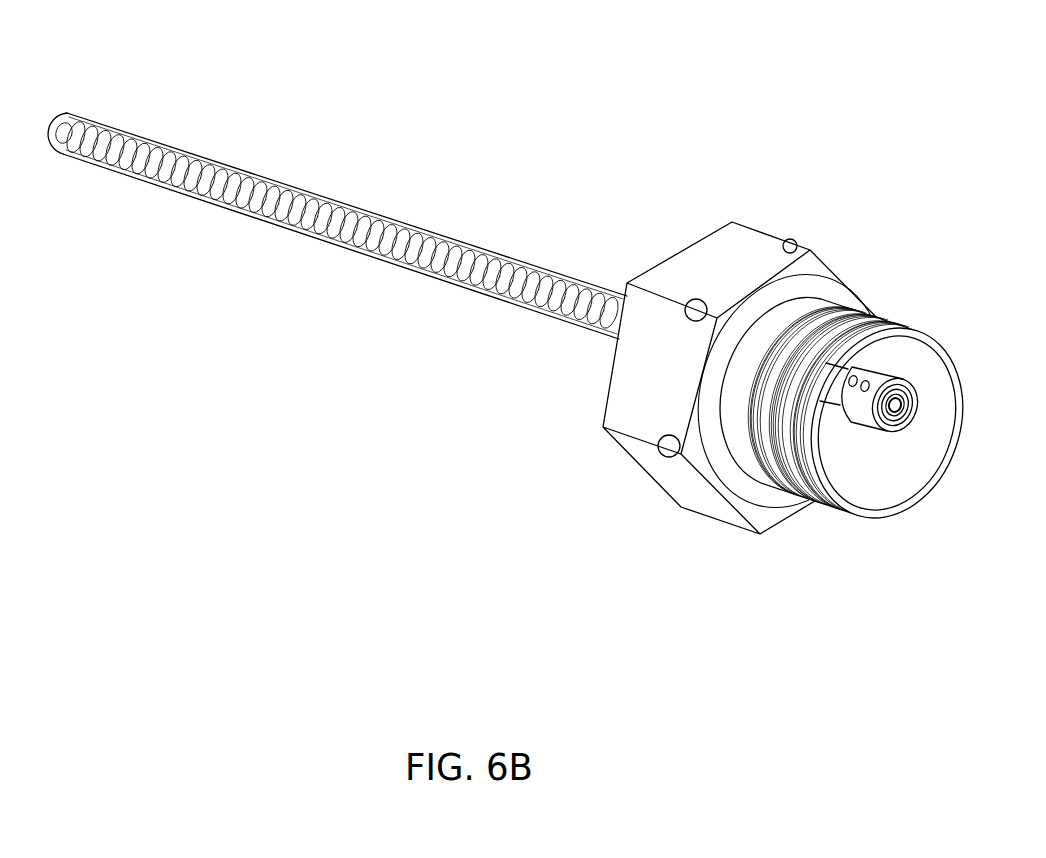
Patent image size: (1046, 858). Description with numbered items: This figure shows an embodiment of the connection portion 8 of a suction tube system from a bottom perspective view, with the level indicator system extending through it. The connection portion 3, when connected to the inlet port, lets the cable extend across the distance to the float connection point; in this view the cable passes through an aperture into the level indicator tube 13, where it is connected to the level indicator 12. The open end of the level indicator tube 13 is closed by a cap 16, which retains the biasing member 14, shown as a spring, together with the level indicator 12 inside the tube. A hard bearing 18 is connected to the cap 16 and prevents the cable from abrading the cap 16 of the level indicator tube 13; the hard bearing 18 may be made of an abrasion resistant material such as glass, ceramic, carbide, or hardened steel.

The connection portion 3 is at (805, 487).
The connection portion 8 is at (700, 257).
The level indicator 12 is at (83, 138).
The level indicator tube 13 is at (80, 157).
The biasing member 14 is at (312, 205).
The cap 16 is at (862, 413).
The hard bearing 18 is at (912, 380).